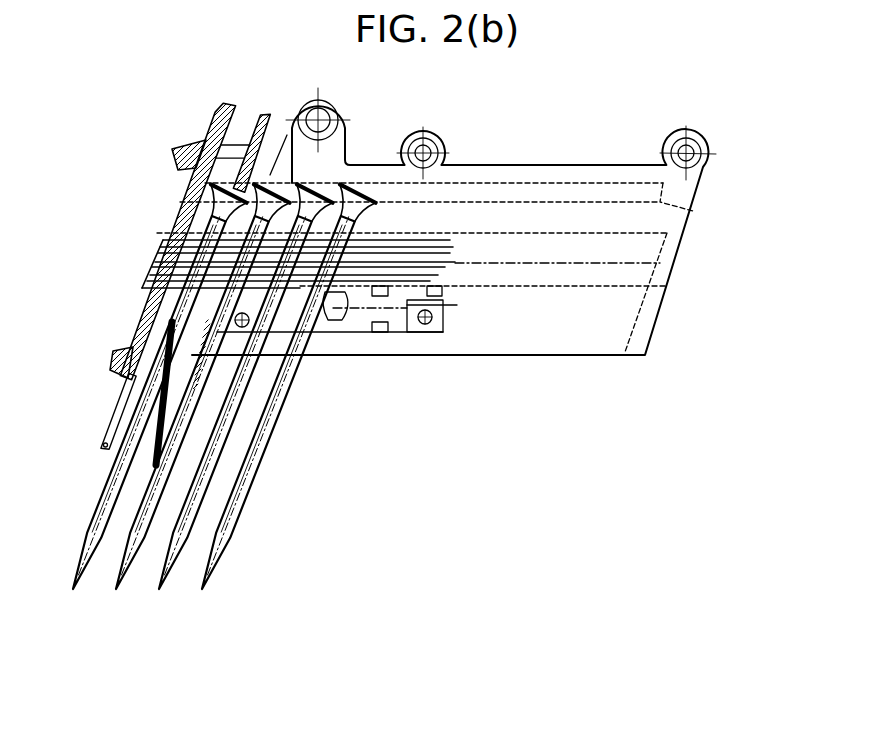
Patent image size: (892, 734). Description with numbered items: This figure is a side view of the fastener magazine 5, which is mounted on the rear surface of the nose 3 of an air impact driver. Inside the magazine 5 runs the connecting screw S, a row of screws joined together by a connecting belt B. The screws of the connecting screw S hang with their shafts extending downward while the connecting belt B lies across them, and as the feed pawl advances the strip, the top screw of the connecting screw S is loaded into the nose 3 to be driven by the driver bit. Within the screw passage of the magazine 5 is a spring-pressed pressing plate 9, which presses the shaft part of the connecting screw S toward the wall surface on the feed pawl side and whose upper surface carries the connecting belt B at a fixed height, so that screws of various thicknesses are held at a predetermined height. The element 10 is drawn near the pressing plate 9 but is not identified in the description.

The fastener magazine 5 is at (558, 164).
The connecting belt B is at (146, 262).
The nose 3 is at (150, 312).
The pressing plate 9 is at (362, 322).
The clip 10 is at (334, 324).
The connecting screw S is at (265, 462).